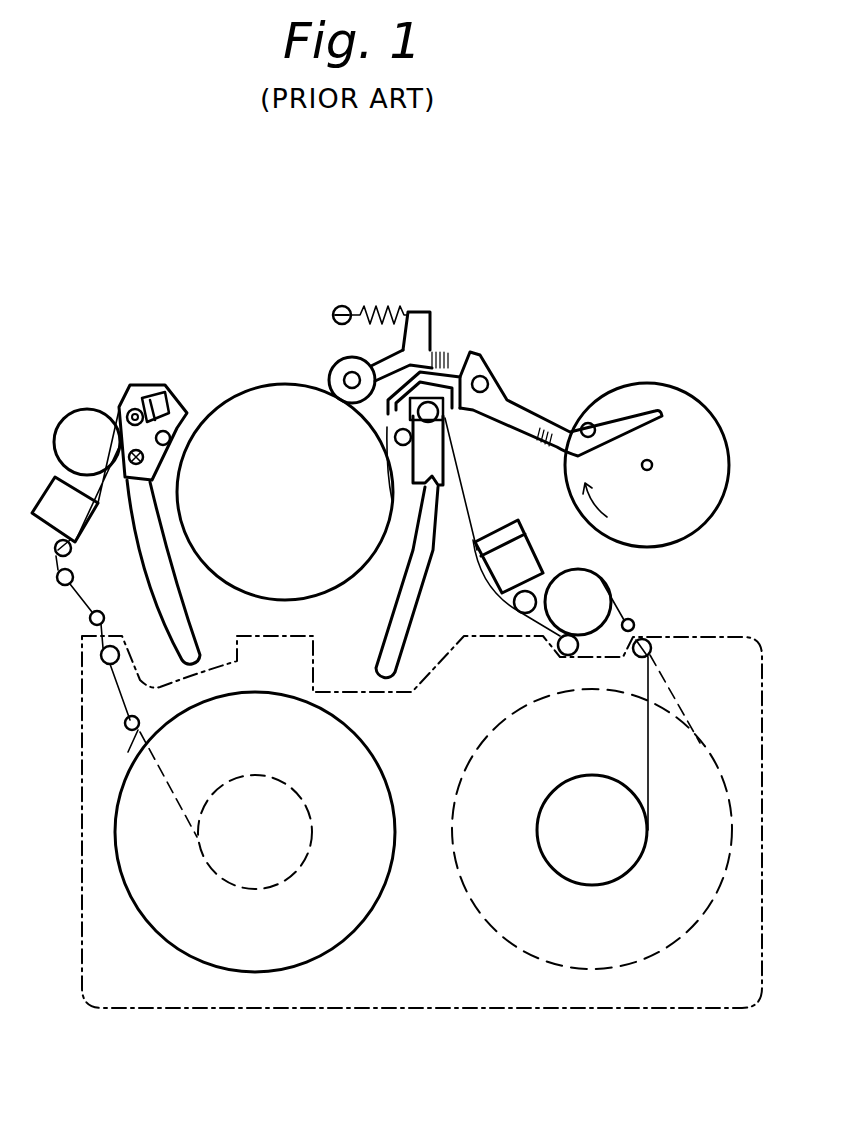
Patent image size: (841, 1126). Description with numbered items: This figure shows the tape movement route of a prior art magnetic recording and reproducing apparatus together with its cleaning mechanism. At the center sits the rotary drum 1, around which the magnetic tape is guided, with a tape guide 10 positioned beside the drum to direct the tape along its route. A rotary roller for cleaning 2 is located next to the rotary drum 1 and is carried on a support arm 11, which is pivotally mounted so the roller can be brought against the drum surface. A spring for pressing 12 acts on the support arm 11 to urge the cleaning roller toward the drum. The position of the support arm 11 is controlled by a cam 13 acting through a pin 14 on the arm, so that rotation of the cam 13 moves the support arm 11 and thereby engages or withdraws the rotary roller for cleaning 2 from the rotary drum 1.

The rotary drum 1 is at (248, 392).
The rotary roller for cleaning 2 is at (336, 364).
The tape guide 10 is at (430, 453).
The support arm 11 is at (470, 356).
The spring for pressing 12 is at (392, 308).
The cam 13 is at (684, 398).
The pin 14 is at (584, 422).